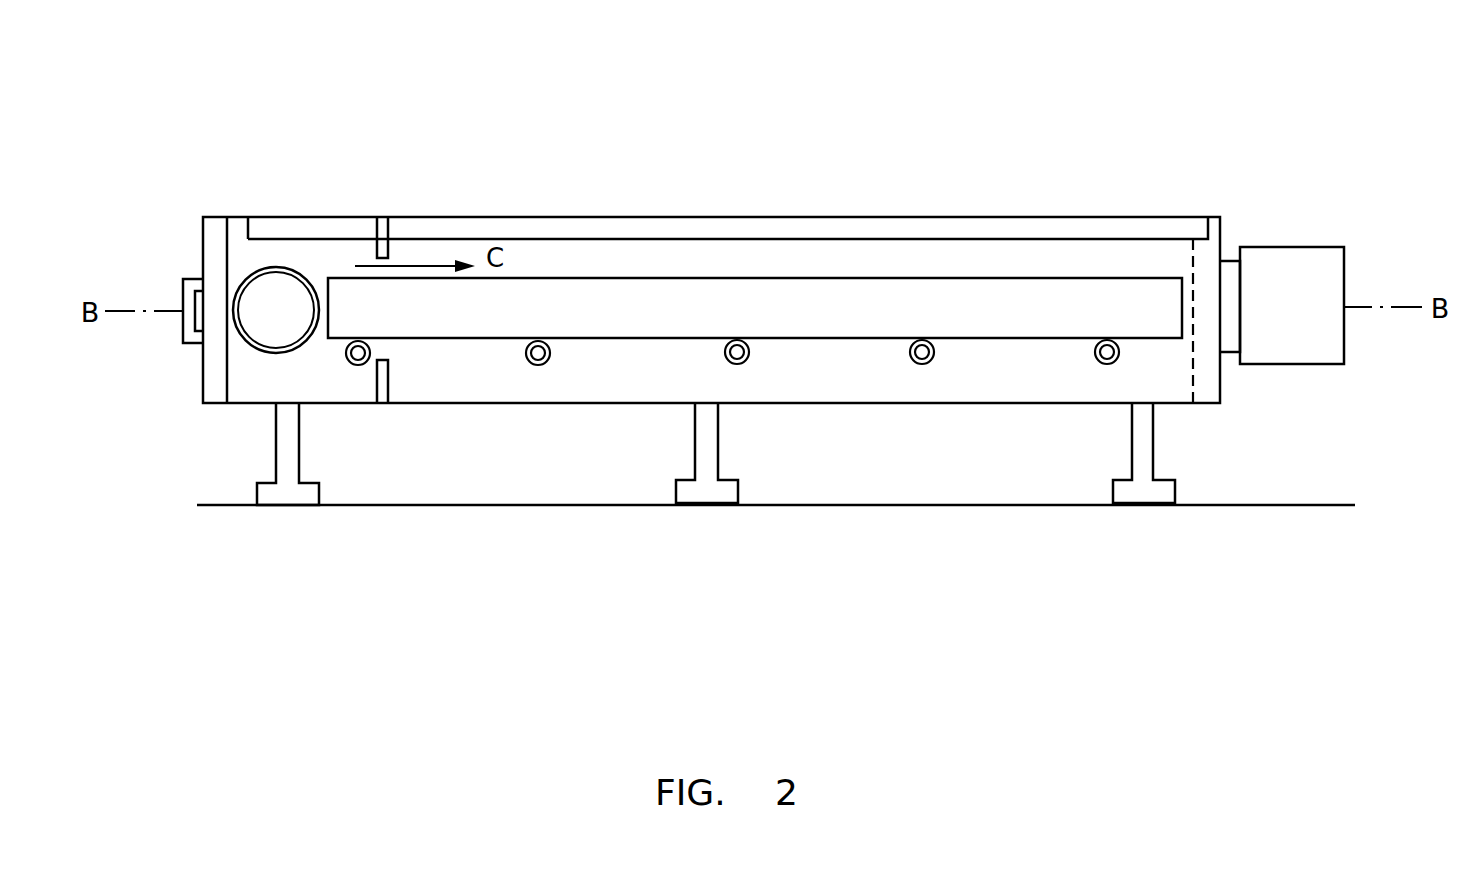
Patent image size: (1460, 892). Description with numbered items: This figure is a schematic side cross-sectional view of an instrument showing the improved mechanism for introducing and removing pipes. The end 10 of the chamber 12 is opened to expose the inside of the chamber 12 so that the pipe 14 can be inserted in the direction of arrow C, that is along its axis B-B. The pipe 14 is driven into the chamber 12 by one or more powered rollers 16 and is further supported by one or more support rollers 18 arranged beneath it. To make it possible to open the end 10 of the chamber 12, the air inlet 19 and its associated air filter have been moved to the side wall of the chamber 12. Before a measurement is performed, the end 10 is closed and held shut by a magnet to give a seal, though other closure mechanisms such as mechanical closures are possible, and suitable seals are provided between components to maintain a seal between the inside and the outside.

The end 10 is at (212, 252).
The chamber 12 is at (850, 215).
The pipe 14 is at (433, 312).
The powered rollers 16 is at (350, 365).
The support rollers 18 is at (745, 362).
The air inlet 19 is at (275, 300).